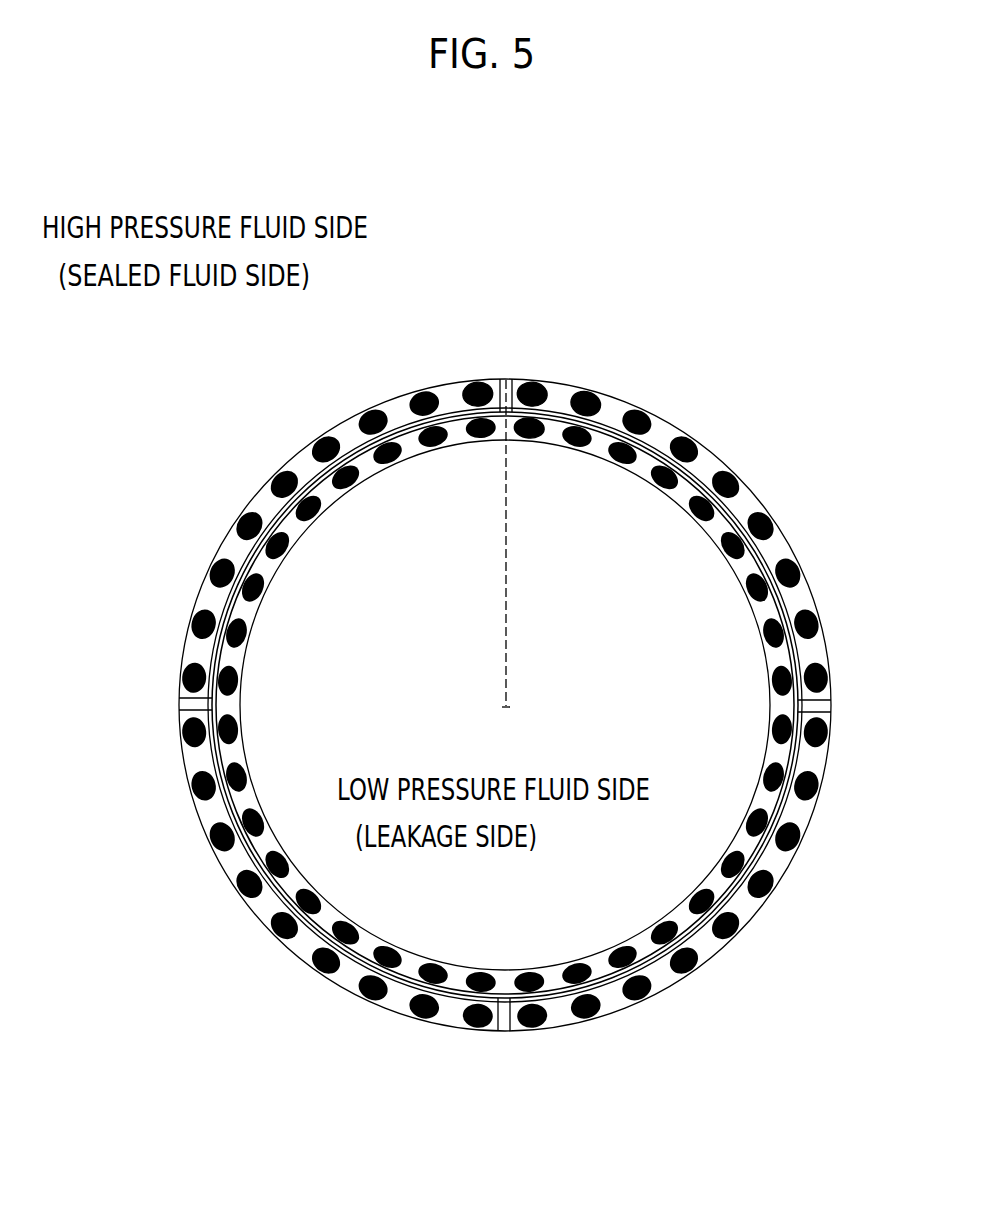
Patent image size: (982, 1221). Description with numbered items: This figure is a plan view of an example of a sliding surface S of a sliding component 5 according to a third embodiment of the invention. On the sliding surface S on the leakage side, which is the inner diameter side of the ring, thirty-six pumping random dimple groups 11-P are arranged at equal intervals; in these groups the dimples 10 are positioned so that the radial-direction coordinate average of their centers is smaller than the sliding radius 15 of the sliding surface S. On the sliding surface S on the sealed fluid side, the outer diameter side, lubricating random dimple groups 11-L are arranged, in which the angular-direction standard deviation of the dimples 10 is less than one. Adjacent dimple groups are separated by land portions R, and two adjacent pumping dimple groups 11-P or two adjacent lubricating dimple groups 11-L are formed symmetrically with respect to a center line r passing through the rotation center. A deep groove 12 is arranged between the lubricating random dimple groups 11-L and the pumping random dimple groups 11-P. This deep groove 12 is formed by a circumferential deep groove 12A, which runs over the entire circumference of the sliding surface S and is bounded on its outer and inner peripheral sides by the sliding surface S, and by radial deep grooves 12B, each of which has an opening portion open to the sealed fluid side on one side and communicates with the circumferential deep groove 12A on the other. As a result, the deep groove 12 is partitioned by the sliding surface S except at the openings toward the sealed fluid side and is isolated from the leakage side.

The sliding component (seal ring) 5 is at (391, 392).
The dimple 10 is at (598, 394).
The lubricating random dimple group 11-L is at (588, 384).
The pumping random dimple group 11-P is at (400, 470).
The deep groove 12 is at (528, 318).
The circumferential deep groove 12A is at (448, 403).
The radial deep groove 12B is at (492, 403).
The sliding radius 15 is at (700, 468).
The sliding surface S is at (663, 432).
The land portion R is at (262, 500).
The center line r is at (507, 634).